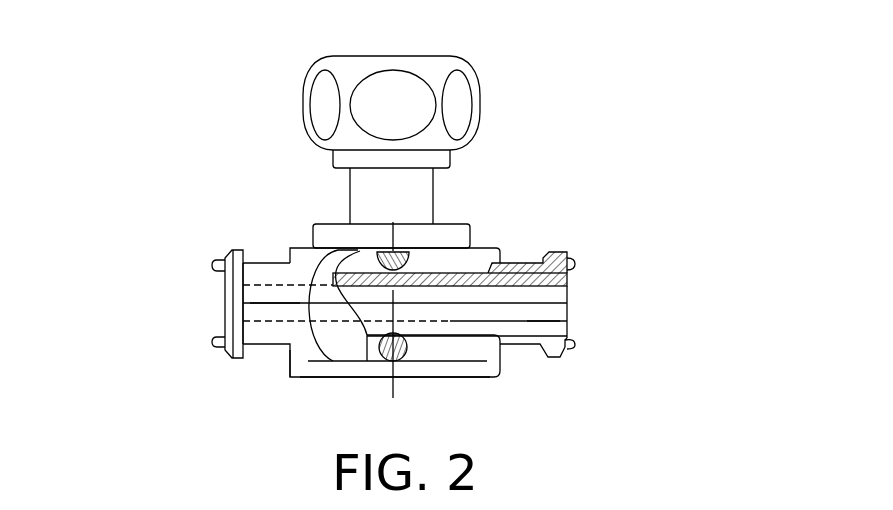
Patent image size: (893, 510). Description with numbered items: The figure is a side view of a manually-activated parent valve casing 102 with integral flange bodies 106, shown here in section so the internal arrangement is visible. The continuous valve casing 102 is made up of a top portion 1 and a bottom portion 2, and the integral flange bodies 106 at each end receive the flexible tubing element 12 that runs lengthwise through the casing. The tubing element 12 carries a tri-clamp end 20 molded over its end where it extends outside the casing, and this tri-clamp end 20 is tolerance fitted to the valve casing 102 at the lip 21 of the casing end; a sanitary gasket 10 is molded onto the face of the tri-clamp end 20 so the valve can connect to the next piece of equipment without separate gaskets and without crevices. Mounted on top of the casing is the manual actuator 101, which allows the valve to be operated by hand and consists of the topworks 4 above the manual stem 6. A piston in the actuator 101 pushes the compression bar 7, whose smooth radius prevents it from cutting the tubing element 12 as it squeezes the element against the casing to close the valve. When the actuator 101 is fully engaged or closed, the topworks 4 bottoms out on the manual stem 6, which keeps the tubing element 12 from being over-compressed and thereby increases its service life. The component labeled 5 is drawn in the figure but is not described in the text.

The top portion 1 is at (288, 248).
The bottom portion 2 is at (288, 357).
The topworks 4 is at (437, 67).
The ball valve element 5 is at (398, 260).
The manual stem 6 is at (350, 198).
The compression bar 7 is at (410, 262).
The sanitary gasket 10 is at (575, 344).
The tubing element 12 is at (567, 275).
The tri-clamp end 20 is at (222, 313).
The lip 21 is at (243, 293).
The manual actuator 101 is at (535, 123).
The parent valve casing 102 is at (638, 298).
The integral flange bodies 106 is at (277, 333).